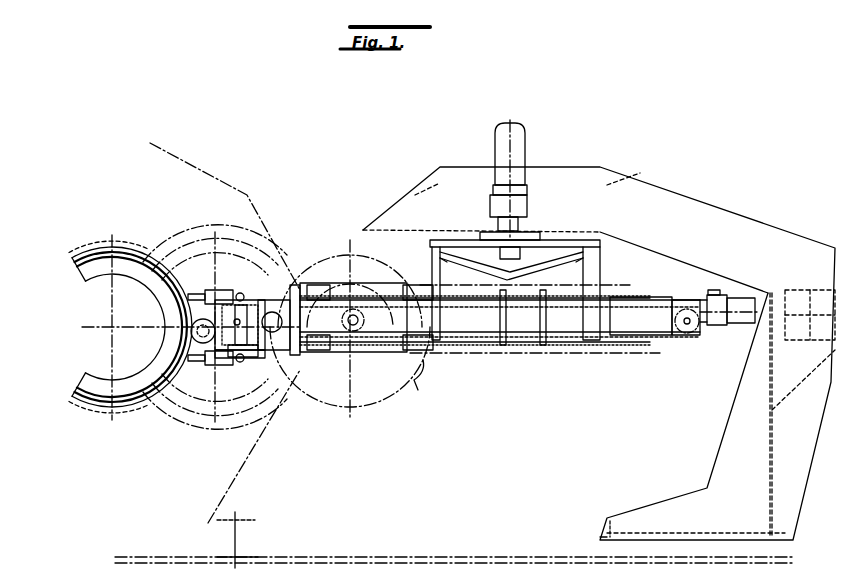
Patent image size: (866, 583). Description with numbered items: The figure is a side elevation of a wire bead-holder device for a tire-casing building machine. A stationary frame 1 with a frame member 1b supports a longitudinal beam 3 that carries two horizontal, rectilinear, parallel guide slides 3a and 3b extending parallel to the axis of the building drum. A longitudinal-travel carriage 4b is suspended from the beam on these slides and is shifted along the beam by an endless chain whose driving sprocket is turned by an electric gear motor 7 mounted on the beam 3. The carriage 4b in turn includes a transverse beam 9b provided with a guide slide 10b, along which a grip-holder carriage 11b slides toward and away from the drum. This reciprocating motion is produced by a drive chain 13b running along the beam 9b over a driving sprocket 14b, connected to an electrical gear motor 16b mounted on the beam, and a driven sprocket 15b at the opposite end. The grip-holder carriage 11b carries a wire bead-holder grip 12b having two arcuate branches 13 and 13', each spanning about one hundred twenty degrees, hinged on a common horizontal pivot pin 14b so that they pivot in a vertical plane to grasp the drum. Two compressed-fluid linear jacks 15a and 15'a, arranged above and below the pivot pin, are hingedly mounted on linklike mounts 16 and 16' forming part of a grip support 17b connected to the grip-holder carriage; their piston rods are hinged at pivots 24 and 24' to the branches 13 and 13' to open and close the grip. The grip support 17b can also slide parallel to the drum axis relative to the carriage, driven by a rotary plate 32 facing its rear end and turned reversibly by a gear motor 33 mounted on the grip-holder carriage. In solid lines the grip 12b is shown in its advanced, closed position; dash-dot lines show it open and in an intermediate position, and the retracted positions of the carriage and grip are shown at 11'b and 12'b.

The stationary frame 1 is at (482, 365).
The frame member 1b is at (806, 404).
The longitudinal beam 3 is at (545, 233).
The guide slide 3a is at (446, 252).
The guide slide 3b is at (573, 252).
The longitudinal-travel carriage 4b is at (538, 337).
The electric gear motor 7 is at (515, 160).
The beam 9b is at (676, 335).
The guide slide 10b is at (492, 296).
The grip-holder carriage 11b is at (302, 285).
The grip-holder carriage in retracted position 11'b is at (545, 338).
The wire bead-holder grip 12b is at (102, 398).
The wire bead-holder grip in retracted position 12'b is at (350, 342).
The grip branch 13 is at (108, 226).
The grip branch 13' is at (114, 423).
The drive chain 13b is at (640, 335).
The driving sprocket and common pivot pin 14b is at (698, 332).
The compressed-fluid linear jack 15a is at (218, 290).
The compressed-fluid linear jack 15'a is at (216, 400).
The driven sprocket 15b is at (362, 330).
The linklike mount 16 is at (240, 305).
The linklike mount 16' is at (240, 387).
The electrical gear motor 16b is at (716, 300).
The grip support 17b is at (256, 357).
The pivot 24 is at (215, 323).
The pivot 24' is at (215, 401).
The rotary plate 32 is at (247, 345).
The gear motor 33 is at (266, 300).